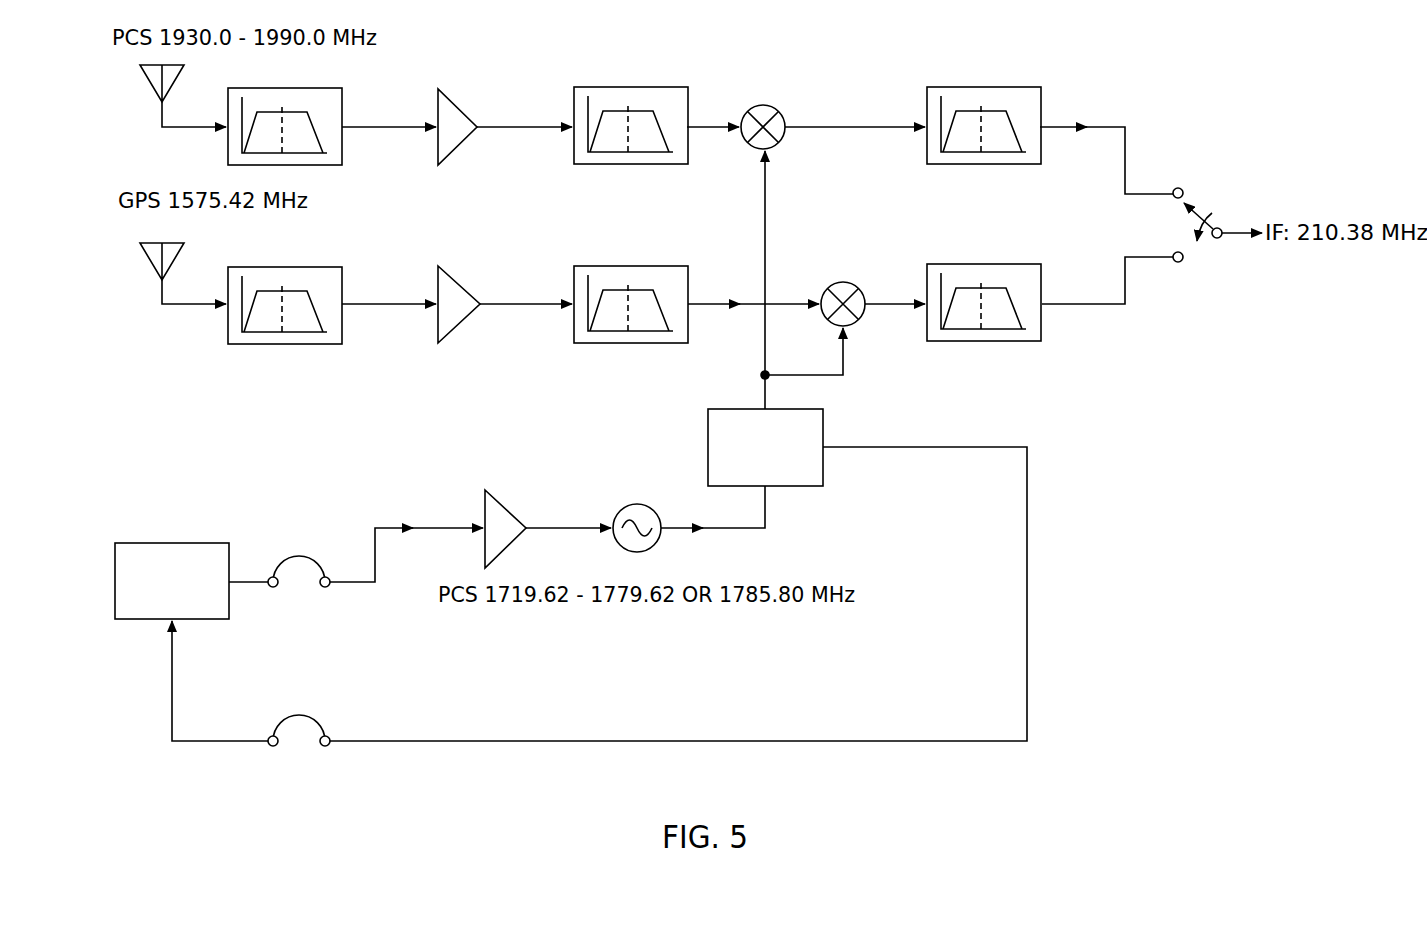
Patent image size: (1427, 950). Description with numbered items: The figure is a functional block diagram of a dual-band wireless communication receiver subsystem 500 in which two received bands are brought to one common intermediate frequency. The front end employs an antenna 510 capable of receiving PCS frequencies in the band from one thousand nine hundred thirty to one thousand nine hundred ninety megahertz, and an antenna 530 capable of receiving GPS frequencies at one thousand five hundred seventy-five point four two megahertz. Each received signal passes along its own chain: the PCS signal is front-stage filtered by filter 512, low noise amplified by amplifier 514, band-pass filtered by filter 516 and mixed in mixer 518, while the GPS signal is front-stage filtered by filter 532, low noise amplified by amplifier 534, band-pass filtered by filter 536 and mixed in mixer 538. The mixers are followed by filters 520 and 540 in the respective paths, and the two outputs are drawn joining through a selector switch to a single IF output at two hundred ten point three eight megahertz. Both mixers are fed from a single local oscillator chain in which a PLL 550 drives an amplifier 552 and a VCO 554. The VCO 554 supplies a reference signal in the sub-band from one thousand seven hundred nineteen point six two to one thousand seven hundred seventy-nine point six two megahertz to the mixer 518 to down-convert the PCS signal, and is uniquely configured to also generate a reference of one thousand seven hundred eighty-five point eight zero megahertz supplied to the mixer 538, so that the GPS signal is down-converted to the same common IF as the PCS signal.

The receiver subsystem 500 is at (1262, 654).
The antenna 510 is at (152, 90).
The front-stage filter 512 is at (290, 88).
The low noise amplifier 514 is at (455, 100).
The band-pass filter 516 is at (642, 87).
The mixer 518 is at (763, 105).
The IF band-pass filter 520 is at (1006, 87).
The antenna 530 is at (152, 268).
The front-stage filter 532 is at (290, 267).
The low noise amplifier 534 is at (455, 278).
The band-pass filter 536 is at (642, 266).
The mixer 538 is at (843, 282).
The IF band-pass filter 540 is at (1006, 264).
The PLL 550 is at (181, 543).
The amplifier 552 is at (500, 505).
The VCO 554 is at (637, 504).